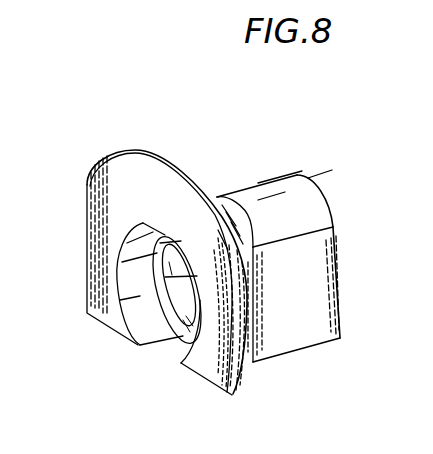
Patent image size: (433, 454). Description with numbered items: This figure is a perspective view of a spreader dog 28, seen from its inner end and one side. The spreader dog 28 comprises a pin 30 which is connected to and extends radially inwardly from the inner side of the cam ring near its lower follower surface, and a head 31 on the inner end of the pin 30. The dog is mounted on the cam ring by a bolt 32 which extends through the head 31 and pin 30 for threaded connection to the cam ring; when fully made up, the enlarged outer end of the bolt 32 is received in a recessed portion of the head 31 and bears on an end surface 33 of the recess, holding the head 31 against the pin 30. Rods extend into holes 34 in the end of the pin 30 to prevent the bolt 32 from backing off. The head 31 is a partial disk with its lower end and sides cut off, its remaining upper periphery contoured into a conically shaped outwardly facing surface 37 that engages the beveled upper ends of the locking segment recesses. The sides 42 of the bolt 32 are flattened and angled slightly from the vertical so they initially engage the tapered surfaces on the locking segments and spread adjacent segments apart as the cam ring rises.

The spreader dog 28 is at (205, 378).
The pin 30 is at (306, 346).
The head 31 is at (106, 160).
The bolt 32 is at (130, 305).
The end surface 33 is at (167, 277).
The holes 34 is at (163, 242).
The conically shaped outwardly facing surface 37 is at (226, 222).
The sides of the bolt 42 is at (318, 280).